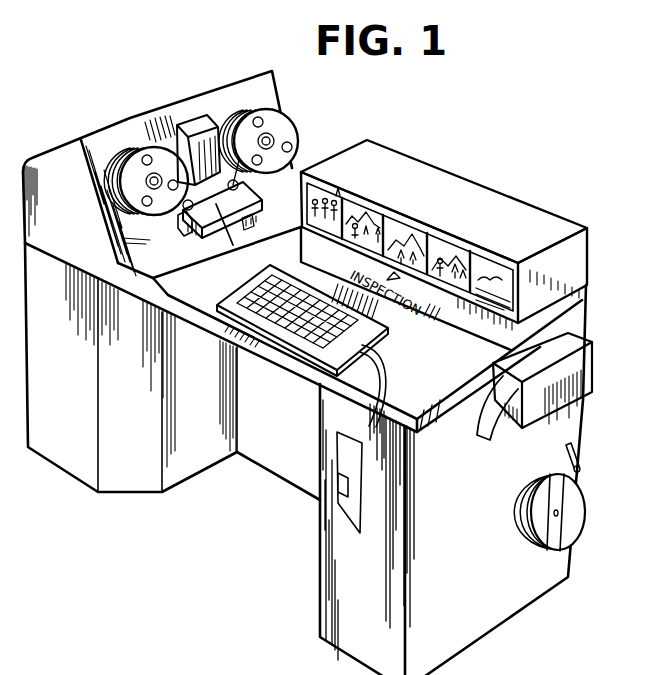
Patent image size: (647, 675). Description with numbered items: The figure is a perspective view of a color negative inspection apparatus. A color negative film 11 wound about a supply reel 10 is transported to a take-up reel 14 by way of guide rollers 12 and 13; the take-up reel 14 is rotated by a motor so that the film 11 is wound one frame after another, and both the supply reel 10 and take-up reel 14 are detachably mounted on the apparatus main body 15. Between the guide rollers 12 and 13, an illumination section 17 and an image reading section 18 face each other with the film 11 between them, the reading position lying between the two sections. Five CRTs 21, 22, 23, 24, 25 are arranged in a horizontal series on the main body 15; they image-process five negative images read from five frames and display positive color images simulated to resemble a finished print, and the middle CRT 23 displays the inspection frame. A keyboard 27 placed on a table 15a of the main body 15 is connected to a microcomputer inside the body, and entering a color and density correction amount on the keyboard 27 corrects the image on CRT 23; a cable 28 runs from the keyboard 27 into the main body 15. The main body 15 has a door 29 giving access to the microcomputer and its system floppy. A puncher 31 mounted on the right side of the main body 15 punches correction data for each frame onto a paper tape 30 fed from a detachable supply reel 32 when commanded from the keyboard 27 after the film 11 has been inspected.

The supply reel 10 is at (283, 127).
The color negative film 11 is at (217, 208).
The guide roller 12 is at (247, 226).
The guide roller 13 is at (187, 233).
The take-up reel 14 is at (107, 199).
The apparatus main body 15 is at (320, 608).
The table 15a is at (439, 410).
The illumination section 17 is at (258, 209).
The image reading section 18 is at (205, 135).
The CRT 21 is at (334, 203).
The CRT 22 is at (370, 219).
The CRT 23 is at (408, 243).
The CRT 24 is at (450, 261).
The CRT 25 is at (490, 279).
The keyboard 27 is at (280, 336).
The keyboard cable 28 is at (388, 375).
The door 29 is at (340, 512).
The paper tape 30 is at (492, 430).
The puncher 31 is at (583, 373).
The supply reel 32 is at (584, 511).